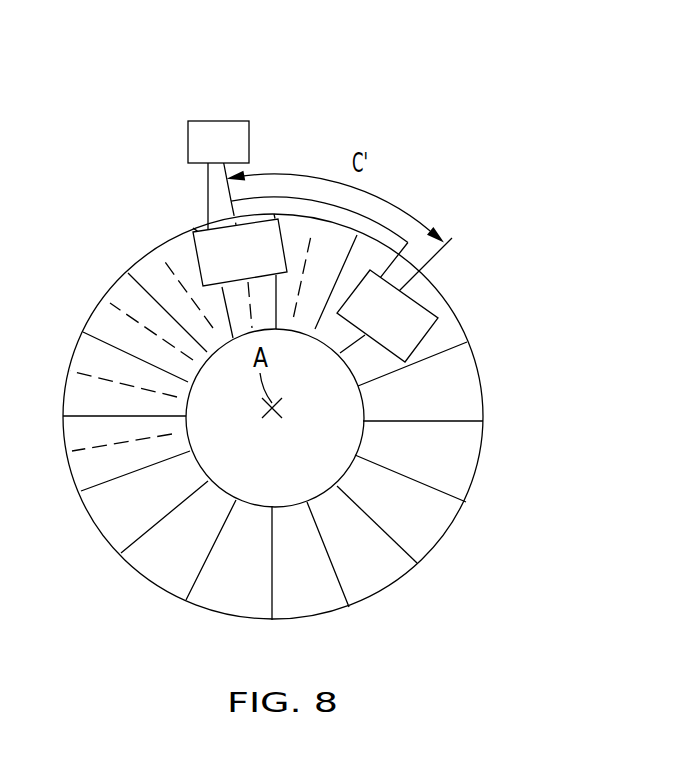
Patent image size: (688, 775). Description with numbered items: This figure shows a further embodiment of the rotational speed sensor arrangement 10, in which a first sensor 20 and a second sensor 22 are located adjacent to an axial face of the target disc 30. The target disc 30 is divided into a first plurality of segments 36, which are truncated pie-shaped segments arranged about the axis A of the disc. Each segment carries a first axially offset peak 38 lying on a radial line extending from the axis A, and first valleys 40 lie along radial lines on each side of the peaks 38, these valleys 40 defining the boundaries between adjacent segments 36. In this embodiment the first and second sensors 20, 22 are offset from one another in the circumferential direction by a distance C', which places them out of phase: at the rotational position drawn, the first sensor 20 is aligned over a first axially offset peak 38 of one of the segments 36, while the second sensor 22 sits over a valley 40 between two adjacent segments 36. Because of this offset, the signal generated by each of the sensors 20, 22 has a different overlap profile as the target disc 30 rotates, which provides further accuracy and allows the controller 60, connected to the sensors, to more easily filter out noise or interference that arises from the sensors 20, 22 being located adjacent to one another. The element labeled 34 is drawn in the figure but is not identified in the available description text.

The rotational speed sensor arrangement 10 is at (496, 174).
The first sensor 20 is at (205, 242).
The second sensor 22 is at (405, 320).
The target disc 30 is at (101, 300).
The yoke 34 is at (365, 577).
The first plurality of segments 36 is at (83, 493).
The first axially offset peak 38 is at (100, 380).
The first valley 40 is at (88, 338).
The controller 60 is at (242, 140).